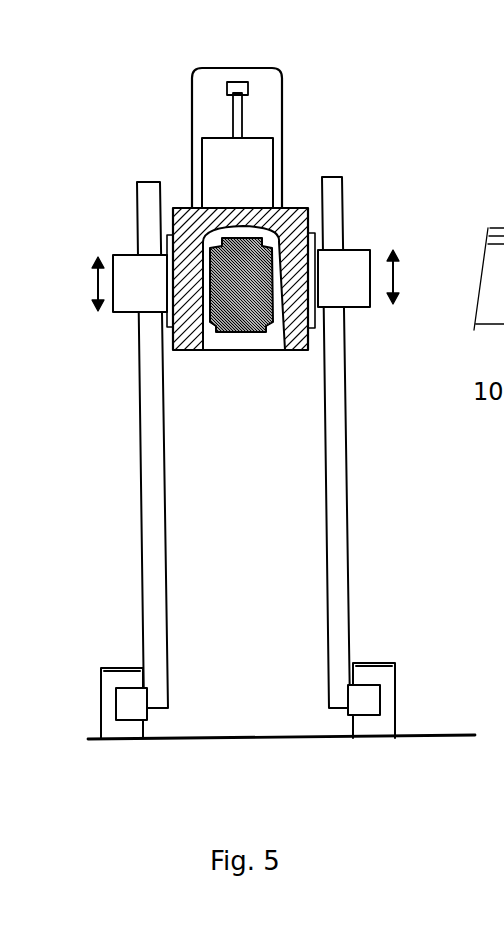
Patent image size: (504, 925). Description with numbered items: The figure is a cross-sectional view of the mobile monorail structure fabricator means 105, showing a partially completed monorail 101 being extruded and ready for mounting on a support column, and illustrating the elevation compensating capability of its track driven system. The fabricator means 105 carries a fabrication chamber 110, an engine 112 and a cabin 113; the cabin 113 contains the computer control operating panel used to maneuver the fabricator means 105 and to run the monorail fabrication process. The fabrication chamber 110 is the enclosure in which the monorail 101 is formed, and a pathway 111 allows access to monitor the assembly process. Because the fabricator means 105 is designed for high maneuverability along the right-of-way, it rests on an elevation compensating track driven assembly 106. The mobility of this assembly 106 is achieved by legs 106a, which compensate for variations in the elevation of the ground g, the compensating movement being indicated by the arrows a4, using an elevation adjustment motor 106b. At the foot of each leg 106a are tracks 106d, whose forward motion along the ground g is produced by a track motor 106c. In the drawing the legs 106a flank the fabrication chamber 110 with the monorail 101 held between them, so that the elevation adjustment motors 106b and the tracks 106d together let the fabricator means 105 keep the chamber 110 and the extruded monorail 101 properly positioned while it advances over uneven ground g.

The mobile monorail structure fabricator means 105 is at (147, 104).
The cabin 113 is at (267, 82).
The engine 112 is at (262, 142).
The fabrication chamber 110 is at (292, 200).
The pathway 111 is at (310, 208).
The monorail 101 is at (273, 262).
The elevation compensating track driven assembly 106 is at (317, 587).
The legs 106a is at (347, 500).
The elevation adjustment motor 106b is at (348, 307).
The track motor 106c is at (374, 698).
The tracks 106d is at (383, 665).
The arrows a4 is at (241, 280).
The ground g is at (266, 742).